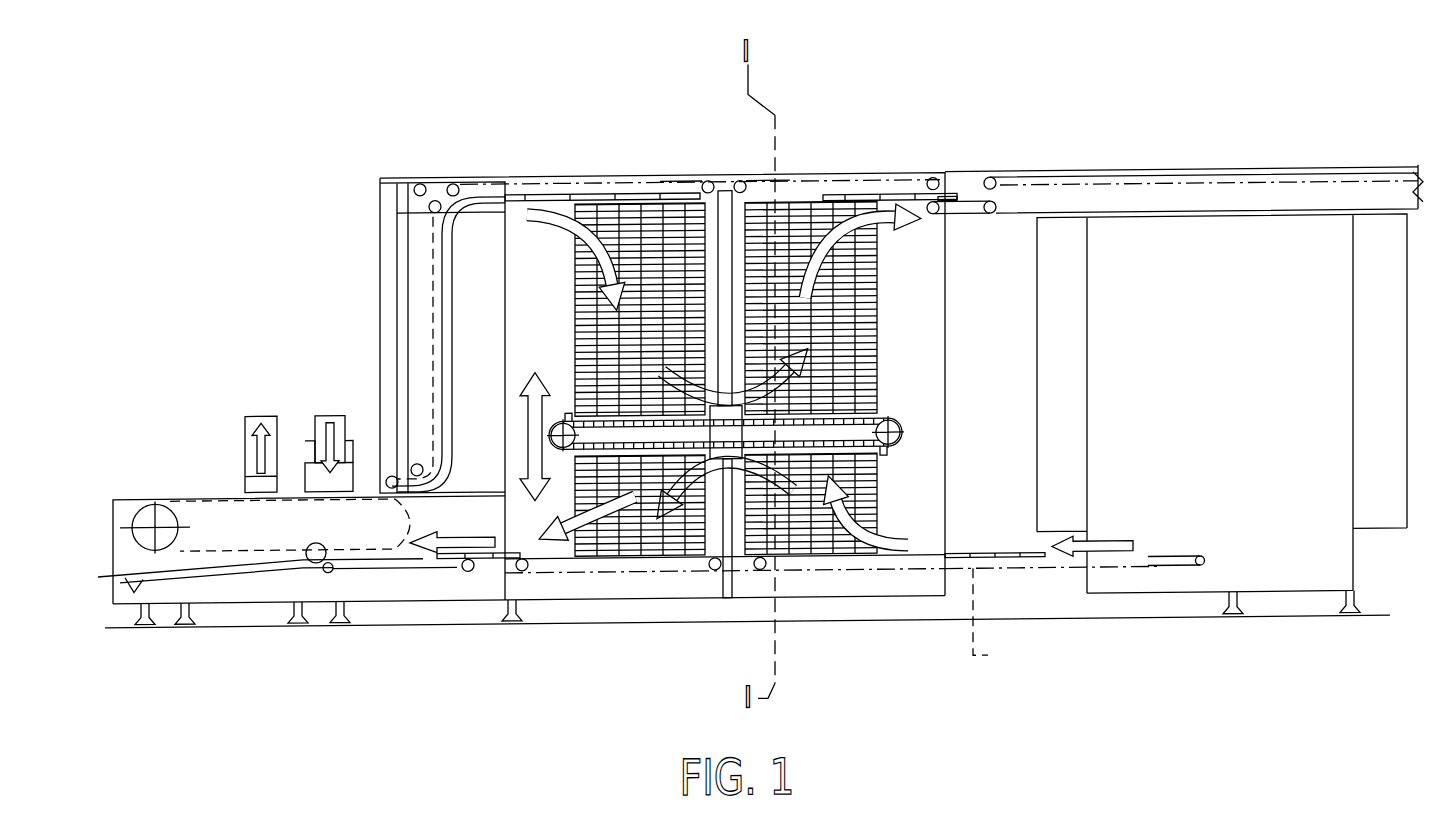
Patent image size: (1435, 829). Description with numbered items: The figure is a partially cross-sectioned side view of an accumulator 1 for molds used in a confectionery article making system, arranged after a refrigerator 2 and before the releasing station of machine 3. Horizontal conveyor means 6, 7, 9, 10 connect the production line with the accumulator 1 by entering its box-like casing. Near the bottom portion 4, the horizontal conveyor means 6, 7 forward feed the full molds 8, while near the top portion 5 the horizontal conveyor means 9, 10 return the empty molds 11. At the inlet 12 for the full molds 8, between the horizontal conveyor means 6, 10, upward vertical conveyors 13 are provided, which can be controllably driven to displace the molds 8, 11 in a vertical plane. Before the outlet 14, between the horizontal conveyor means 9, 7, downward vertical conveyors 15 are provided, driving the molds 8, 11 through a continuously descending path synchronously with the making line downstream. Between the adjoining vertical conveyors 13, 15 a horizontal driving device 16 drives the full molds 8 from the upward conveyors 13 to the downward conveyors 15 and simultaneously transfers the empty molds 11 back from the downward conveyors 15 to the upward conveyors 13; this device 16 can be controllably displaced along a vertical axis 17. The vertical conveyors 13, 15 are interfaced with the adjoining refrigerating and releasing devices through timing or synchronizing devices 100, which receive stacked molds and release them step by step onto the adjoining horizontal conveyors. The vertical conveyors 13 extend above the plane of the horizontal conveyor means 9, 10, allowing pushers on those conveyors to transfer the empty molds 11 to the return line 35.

The accumulator 1 is at (803, 157).
The refrigerator 2 is at (1203, 161).
The releasing station of machine 3 is at (343, 227).
The bottom portion 4 is at (673, 599).
The top portion 5 is at (705, 166).
The horizontal conveyor means 6 is at (992, 620).
The horizontal conveyor means 7 is at (605, 570).
The full molds 8 is at (1008, 556).
The horizontal conveyor means 9 is at (595, 180).
The horizontal conveyor means 10 is at (883, 178).
The empty molds 11 is at (526, 199).
The inlet 12 is at (980, 576).
The vertical conveyors 13 is at (887, 328).
The outlet 14 is at (505, 572).
The vertical conveyors 15 is at (563, 290).
The horizontal driving device 16 is at (930, 440).
The vertical axis 17 is at (730, 566).
The return line 35 is at (1028, 169).
The timing or synchronizing devices 100 is at (955, 216).